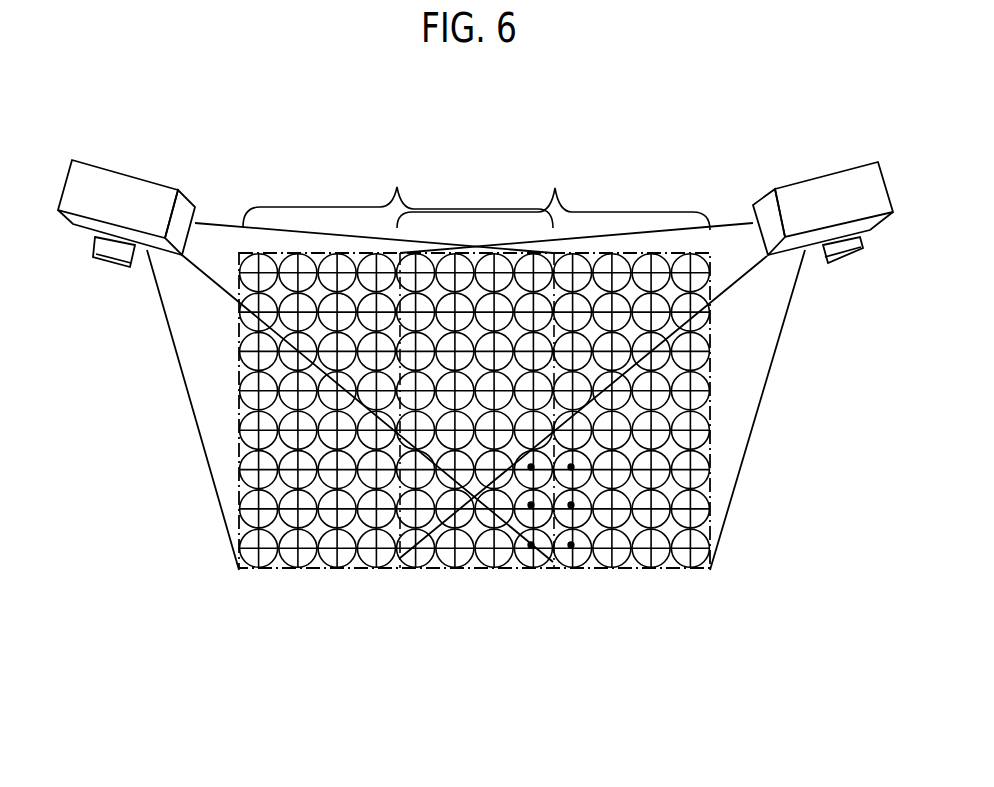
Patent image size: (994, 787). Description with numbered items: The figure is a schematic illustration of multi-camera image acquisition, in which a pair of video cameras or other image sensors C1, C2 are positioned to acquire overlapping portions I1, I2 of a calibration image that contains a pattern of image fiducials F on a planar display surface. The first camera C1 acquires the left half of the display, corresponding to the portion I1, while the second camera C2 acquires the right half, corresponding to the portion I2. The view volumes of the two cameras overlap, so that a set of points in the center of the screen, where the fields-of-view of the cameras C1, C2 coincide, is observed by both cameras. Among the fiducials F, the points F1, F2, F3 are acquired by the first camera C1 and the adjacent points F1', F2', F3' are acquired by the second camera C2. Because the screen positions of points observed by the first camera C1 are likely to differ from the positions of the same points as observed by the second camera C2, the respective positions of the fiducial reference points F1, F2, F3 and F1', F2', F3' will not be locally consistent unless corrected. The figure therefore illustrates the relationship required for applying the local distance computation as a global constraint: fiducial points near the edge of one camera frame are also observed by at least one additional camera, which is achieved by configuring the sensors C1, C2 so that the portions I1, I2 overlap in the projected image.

The first camera C1 is at (305, 365).
The second camera C2 is at (646, 366).
The first portion of the calibration image I1 is at (398, 184).
The second portion of the calibration image I2 is at (553, 185).
The pattern of image fiducials F is at (240, 413).
The first fiducial reference point F1 is at (473, 549).
The second fiducial reference point F2 is at (493, 577).
The third fiducial reference point F3 is at (512, 609).
The first adjacent fiducial reference point F1' is at (590, 611).
The second adjacent fiducial reference point F2' is at (611, 582).
The third adjacent fiducial reference point F3' is at (630, 554).